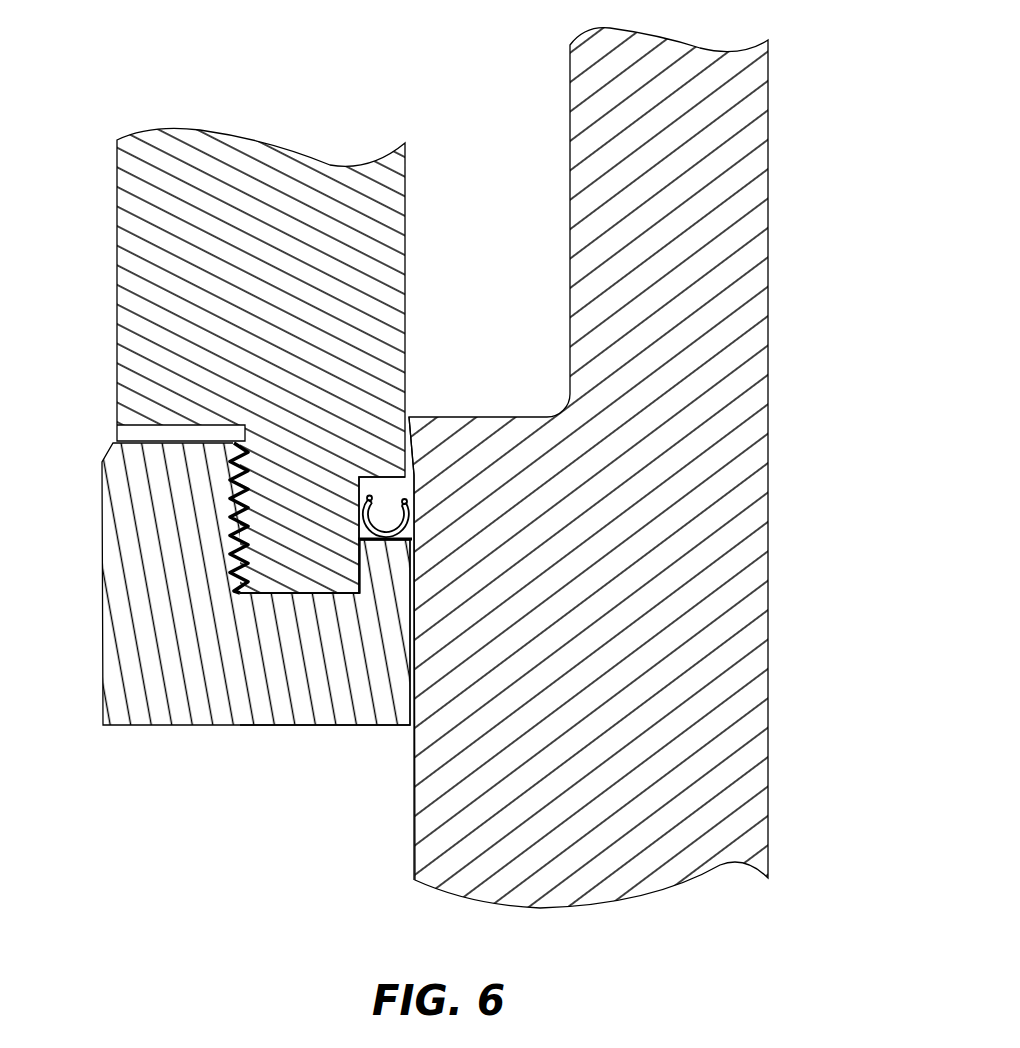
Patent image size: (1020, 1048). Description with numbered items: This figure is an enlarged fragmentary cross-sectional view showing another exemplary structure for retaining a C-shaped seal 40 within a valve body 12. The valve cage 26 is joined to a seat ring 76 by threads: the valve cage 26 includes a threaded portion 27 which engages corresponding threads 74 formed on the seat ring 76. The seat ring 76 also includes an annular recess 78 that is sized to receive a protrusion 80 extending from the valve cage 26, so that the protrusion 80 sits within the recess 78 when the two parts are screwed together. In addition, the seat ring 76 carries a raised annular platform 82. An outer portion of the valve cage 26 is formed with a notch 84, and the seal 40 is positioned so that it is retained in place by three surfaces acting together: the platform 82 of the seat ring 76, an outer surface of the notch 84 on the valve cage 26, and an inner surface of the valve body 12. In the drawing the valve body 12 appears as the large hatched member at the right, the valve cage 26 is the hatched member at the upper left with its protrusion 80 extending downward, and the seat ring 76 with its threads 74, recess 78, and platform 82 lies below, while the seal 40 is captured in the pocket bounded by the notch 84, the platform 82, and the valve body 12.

The valve body 12 is at (769, 683).
The valve cage 26 is at (117, 300).
The threaded portion 27 is at (240, 519).
The seal 40 is at (417, 480).
The threads 74 is at (233, 517).
The seat ring 76 is at (297, 672).
The annular recess 78 is at (334, 600).
The protrusion 80 is at (320, 527).
The raised annular platform 82 is at (393, 556).
The notch 84 is at (403, 505).